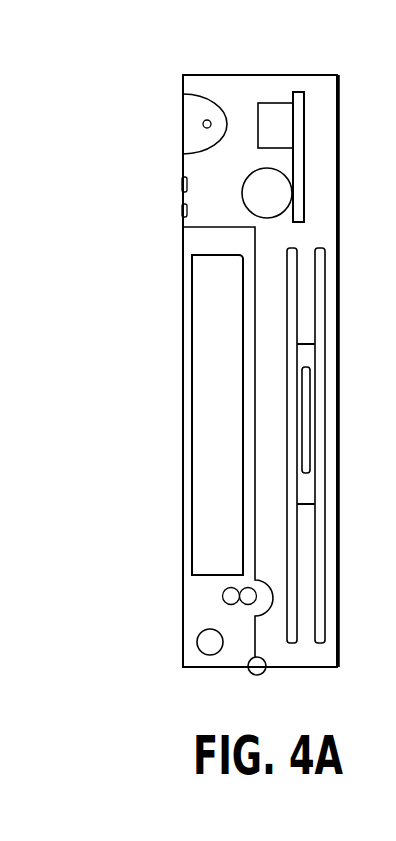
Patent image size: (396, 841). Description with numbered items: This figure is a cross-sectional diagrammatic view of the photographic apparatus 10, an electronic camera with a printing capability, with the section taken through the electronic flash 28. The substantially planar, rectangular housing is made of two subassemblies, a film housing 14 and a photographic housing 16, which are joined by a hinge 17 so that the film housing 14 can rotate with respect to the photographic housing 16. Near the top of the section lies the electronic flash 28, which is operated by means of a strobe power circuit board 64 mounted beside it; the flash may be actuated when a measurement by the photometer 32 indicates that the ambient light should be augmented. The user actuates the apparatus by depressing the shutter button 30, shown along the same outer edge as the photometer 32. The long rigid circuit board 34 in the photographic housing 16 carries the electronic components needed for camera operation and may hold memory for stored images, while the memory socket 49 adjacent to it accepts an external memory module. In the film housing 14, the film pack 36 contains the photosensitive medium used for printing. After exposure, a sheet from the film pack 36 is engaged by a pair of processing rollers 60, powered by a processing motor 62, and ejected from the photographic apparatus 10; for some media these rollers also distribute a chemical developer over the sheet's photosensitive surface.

The photographic apparatus 10 is at (260, 58).
The film housing 14 is at (195, 655).
The photographic housing 16 is at (322, 658).
The hinge 17 is at (258, 676).
The electronic flash 28 is at (192, 128).
The shutter button 30 is at (181, 185).
The photometer 32 is at (182, 211).
The rigid circuit board 34 is at (322, 623).
The film pack 36 is at (208, 483).
The memory socket 49 is at (308, 352).
The processing rollers 60 is at (210, 598).
The processing motor 62 is at (213, 645).
The strobe power circuit board 64 is at (306, 154).